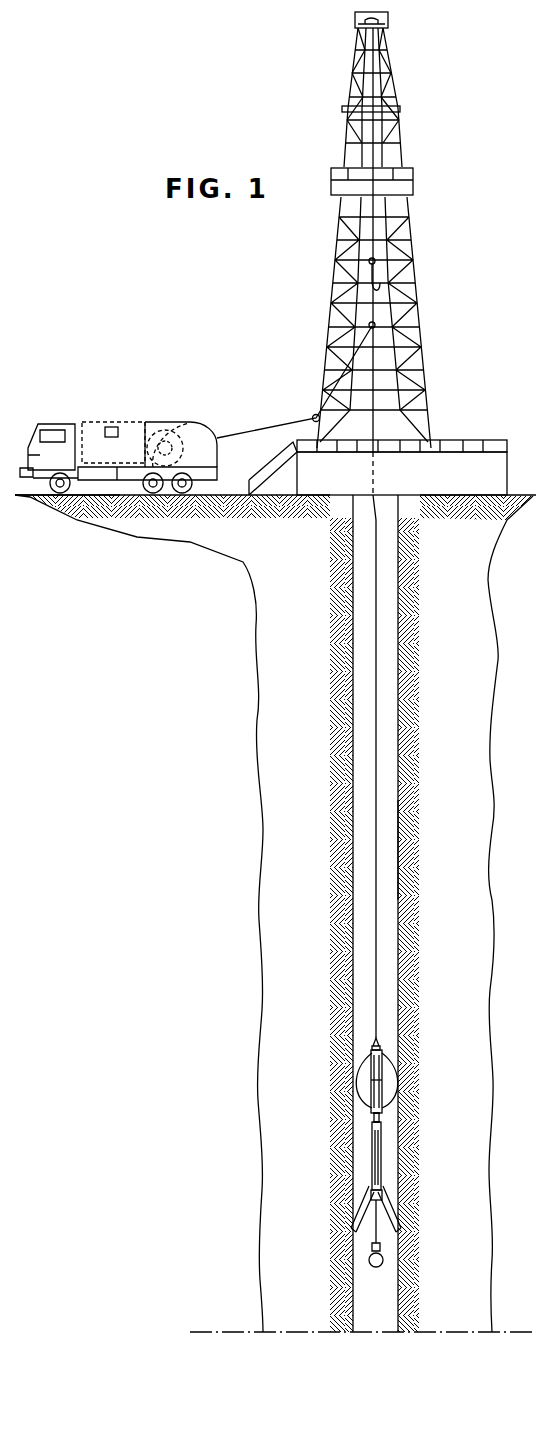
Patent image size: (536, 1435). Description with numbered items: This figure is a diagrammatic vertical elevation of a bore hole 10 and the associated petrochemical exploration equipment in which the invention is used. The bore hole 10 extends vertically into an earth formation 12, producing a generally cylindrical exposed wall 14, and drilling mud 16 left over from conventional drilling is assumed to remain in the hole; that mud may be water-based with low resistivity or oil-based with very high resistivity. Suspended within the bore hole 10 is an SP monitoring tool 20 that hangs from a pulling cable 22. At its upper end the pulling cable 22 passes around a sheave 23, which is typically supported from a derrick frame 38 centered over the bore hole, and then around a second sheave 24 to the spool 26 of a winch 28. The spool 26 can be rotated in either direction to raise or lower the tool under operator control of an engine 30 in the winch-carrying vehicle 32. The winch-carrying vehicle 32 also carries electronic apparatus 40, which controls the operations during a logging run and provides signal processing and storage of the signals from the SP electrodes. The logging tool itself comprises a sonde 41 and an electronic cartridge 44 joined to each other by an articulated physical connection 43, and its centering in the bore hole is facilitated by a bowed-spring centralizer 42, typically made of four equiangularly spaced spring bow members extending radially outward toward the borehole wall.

The bore hole 10 is at (357, 800).
The earth formation 12 is at (292, 713).
The exposed wall 14 is at (396, 846).
The drilling mud 16 is at (380, 1297).
The SP monitoring tool 20 is at (396, 1155).
The pulling cable 22 is at (374, 645).
The sheave 23 is at (375, 325).
The sheave 24 is at (309, 413).
The spool 26 is at (172, 430).
The winch 28 is at (153, 425).
The engine 30 is at (38, 492).
The winch-carrying vehicle 32 is at (57, 430).
The derrick frame 38 is at (348, 150).
The electronic apparatus 40 is at (92, 432).
The sonde 41 is at (380, 1178).
The bowed-spring centralizer 42 is at (358, 1058).
The articulated physical connection 43 is at (380, 1118).
The electronic cartridge 44 is at (373, 1085).